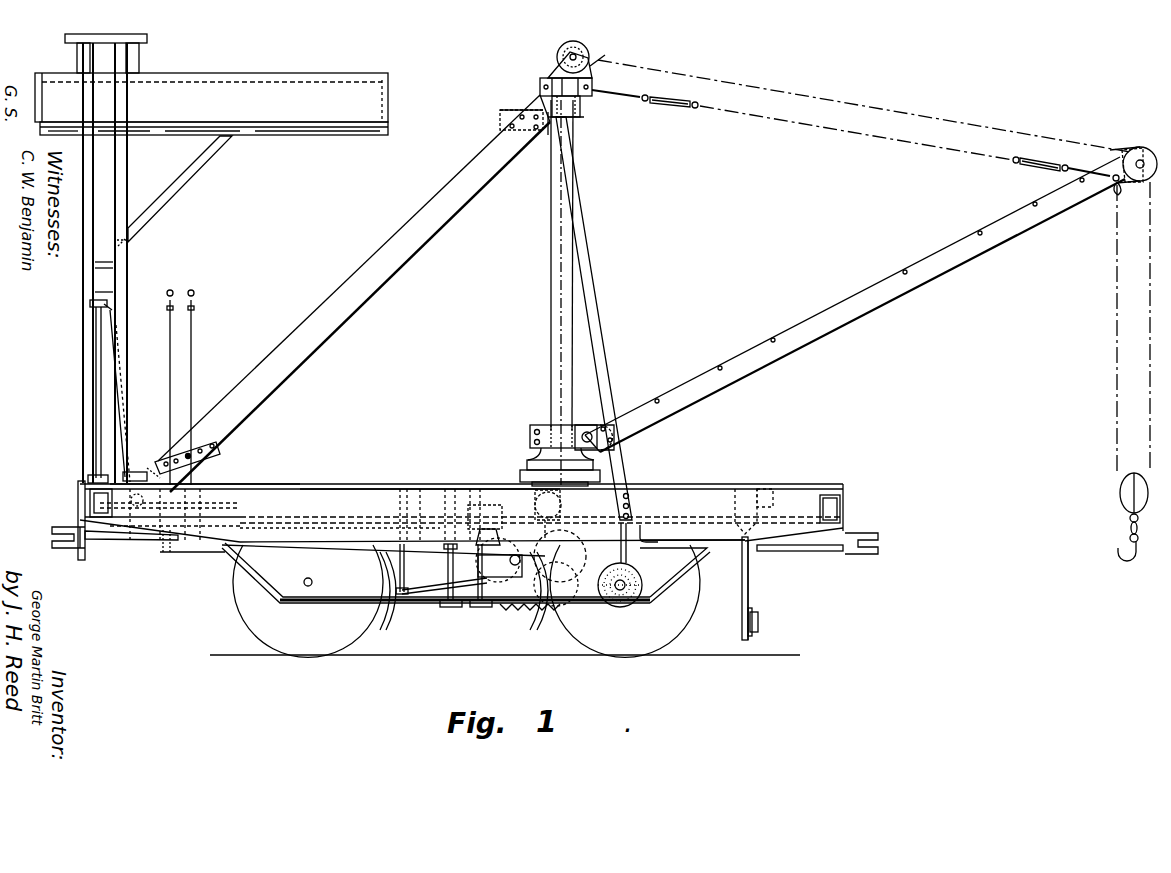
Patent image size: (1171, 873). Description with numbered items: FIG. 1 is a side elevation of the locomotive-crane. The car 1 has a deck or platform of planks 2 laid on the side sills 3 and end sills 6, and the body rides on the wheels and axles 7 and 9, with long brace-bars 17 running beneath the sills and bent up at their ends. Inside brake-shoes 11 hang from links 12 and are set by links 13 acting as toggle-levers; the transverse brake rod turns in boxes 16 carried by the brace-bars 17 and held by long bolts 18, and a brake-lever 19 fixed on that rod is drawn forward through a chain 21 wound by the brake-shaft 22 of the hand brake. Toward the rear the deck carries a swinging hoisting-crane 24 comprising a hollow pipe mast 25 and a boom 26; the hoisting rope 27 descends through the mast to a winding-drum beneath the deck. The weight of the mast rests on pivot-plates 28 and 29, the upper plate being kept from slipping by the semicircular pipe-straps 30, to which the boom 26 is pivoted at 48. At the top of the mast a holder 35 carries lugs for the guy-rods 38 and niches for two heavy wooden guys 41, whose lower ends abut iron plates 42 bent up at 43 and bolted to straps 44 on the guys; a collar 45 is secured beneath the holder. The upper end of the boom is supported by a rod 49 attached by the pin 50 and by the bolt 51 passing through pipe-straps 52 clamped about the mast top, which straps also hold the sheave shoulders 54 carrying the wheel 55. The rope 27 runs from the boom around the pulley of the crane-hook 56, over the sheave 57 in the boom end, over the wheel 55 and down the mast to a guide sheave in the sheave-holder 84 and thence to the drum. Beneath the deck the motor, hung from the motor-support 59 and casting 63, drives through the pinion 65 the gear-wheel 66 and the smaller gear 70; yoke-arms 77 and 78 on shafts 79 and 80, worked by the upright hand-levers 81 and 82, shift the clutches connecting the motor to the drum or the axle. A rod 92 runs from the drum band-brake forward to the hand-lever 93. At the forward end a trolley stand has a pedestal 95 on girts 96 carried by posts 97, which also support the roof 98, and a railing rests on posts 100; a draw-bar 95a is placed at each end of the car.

The car frame 1 is at (461, 506).
The planks 2 is at (364, 486).
The side sill 3 is at (262, 498).
The end sill 6 is at (841, 511).
The wheel and axle 7 is at (308, 637).
The wheel and axle 9 is at (625, 601).
The inside brake-shoe 11 is at (388, 622).
The link 12 is at (404, 572).
The link 13 is at (423, 594).
The box 16 is at (461, 606).
The brace-bar 17 is at (268, 583).
The long bolt 18 is at (446, 567).
The brake-lever 19 is at (487, 561).
The chain 21 is at (112, 541).
The brake-shaft 22 is at (77, 510).
The derrick frame 24 is at (443, 299).
The mast 25 is at (550, 352).
The boom 26 is at (875, 294).
The hoisting rope 27 is at (763, 86).
The pivot-plate 28 is at (527, 467).
The pivot-plate 29 is at (520, 482).
The pipe-strap 30 is at (530, 434).
The top-mast holder 35 is at (534, 104).
The guy-rod 38 is at (608, 347).
The wooden guy 41 is at (356, 332).
The iron plate 42 is at (138, 403).
The bent-up portion 43 is at (161, 472).
The strap 44 is at (218, 432).
The collar 45 is at (552, 132).
The boom pivot 48 is at (588, 430).
The chain or rod 49 is at (833, 128).
The pin 50 is at (1113, 186).
The bolt 51 is at (594, 86).
The pipe-strap 52 is at (556, 75).
The sheave shoulder 54 is at (598, 58).
The sheave 55 is at (576, 44).
The crane-hook 56 is at (1118, 492).
The sheave 57 is at (1136, 148).
The motor-support 59 is at (749, 582).
The casting 63 is at (759, 624).
The pinion 65 is at (728, 590).
The gear-wheel 66 is at (565, 560).
The gear 70 is at (560, 590).
The yoke-arm 77 is at (487, 522).
The yoke-arm 78 is at (624, 556).
The clutch-operating shaft 79 is at (168, 548).
The clutch-operating shaft 80 is at (660, 532).
The hand-lever 81 is at (168, 349).
The hand-lever 82 is at (193, 349).
The sheave-holder 84 is at (565, 512).
The rod 92 is at (272, 530).
The hand-lever 93 is at (128, 414).
The pedestal 95 is at (104, 34).
The draw-bar 95a is at (888, 544).
The girt 96 is at (78, 56).
The post 97 is at (150, 162).
The roof 98 is at (76, 323).
The post 100 is at (96, 396).